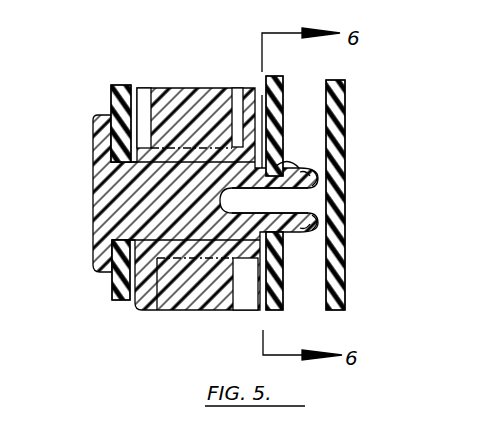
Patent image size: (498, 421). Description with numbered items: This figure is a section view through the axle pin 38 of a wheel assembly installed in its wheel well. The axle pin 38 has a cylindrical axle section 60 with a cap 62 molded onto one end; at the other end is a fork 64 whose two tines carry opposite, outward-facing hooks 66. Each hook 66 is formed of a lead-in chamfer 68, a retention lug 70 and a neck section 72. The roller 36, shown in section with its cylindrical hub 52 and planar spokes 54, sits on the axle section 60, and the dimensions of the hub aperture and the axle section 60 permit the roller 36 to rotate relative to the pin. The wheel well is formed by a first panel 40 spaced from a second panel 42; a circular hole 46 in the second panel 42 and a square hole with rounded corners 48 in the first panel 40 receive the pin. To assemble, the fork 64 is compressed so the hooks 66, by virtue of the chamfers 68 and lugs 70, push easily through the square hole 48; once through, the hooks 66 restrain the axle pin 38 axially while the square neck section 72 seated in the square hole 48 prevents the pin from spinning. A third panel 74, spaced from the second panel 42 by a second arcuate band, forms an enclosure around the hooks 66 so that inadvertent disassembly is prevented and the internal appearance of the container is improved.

The roller 36 is at (147, 312).
The axle pin 38 is at (88, 192).
The first panel 40 is at (264, 312).
The second panel 42 is at (110, 86).
The circular hole 46 is at (102, 232).
The square hole with rounded corners 48 is at (297, 163).
The cylindrical hub 52 is at (245, 88).
The planar spokes 54 is at (173, 97).
The cylindrical axle section 60 is at (173, 205).
The cap 62 is at (112, 262).
The fork 64 is at (292, 203).
The hooks 66 is at (312, 166).
The lead-in chamfer 68 is at (304, 166).
The retention lug 70 is at (283, 117).
The neck section 72 is at (250, 218).
The third panel 74 is at (361, 195).